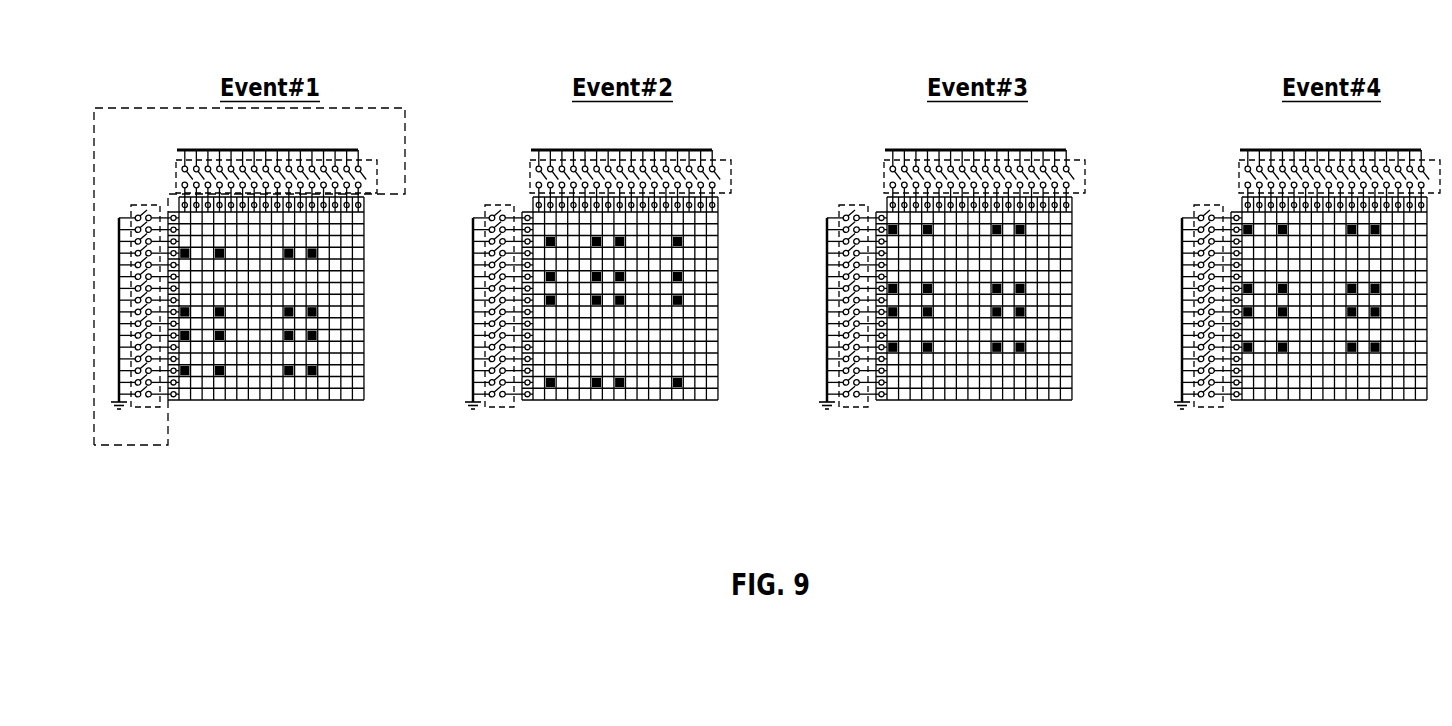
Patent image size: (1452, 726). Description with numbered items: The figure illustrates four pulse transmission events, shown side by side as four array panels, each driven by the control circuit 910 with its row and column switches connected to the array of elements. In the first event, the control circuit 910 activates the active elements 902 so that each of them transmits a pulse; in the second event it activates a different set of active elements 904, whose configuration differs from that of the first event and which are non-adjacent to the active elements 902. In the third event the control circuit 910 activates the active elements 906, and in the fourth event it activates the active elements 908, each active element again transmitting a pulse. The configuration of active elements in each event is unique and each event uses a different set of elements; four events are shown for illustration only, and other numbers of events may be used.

The control circuit 910 is at (145, 108).
The active elements 902 is at (288, 400).
The active elements 904 is at (666, 400).
The active elements 906 is at (1008, 400).
The active elements 908 is at (1349, 400).